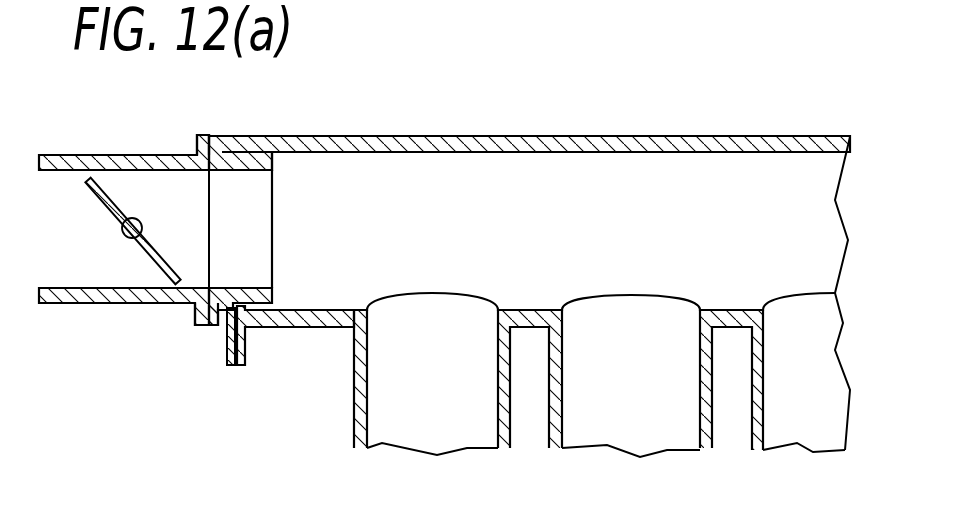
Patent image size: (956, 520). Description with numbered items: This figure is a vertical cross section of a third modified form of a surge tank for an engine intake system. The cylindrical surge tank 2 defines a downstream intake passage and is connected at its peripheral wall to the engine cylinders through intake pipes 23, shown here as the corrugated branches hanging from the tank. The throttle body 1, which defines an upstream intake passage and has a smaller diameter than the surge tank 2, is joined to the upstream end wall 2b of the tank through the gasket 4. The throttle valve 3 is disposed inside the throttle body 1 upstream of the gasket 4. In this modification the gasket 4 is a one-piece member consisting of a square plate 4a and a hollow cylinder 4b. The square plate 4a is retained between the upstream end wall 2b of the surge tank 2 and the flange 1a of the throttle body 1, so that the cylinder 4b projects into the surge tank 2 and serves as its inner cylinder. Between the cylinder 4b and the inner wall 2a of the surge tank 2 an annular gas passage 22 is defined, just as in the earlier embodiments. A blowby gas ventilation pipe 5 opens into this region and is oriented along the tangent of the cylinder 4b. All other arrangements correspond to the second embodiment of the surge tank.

The throttle body 1 is at (85, 154).
The flange of the throttle body 1a is at (195, 137).
The surge tank 2 is at (677, 126).
The inner wall of the surge tank 2a is at (507, 158).
The upstream end wall of the surge tank 2b is at (232, 157).
The throttle valve 3 is at (145, 250).
The gasket 4 is at (220, 128).
The square plate 4a is at (212, 328).
The hollow cylinder 4b is at (270, 297).
The blowby gas ventilation pipe 5 is at (225, 352).
The gas passage 22 is at (261, 328).
The intake pipes 23 is at (512, 413).